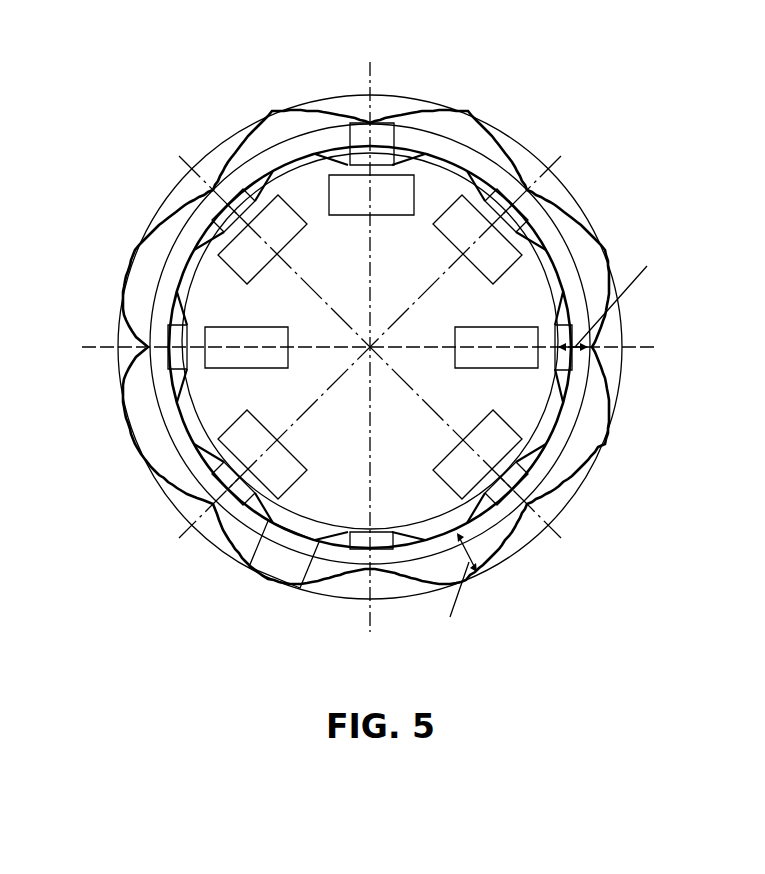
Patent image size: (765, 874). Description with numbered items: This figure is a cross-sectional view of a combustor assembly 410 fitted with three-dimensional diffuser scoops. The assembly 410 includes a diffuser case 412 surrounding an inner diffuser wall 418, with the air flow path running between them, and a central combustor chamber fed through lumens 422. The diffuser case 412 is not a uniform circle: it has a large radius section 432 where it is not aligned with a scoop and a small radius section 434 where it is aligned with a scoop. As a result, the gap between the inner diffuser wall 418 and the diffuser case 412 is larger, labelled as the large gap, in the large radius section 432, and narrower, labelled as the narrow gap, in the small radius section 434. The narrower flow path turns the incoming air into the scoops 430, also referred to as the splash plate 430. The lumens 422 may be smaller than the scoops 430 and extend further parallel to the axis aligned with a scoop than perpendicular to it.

The assembly 410 is at (135, 46).
The diffuser case 412 is at (602, 253).
The inner diffuser wall 418 is at (566, 252).
The lumen 422 is at (277, 203).
The splash plate 430 is at (515, 478).
The large radius section 432 is at (135, 254).
The small radius section 434 is at (197, 198).